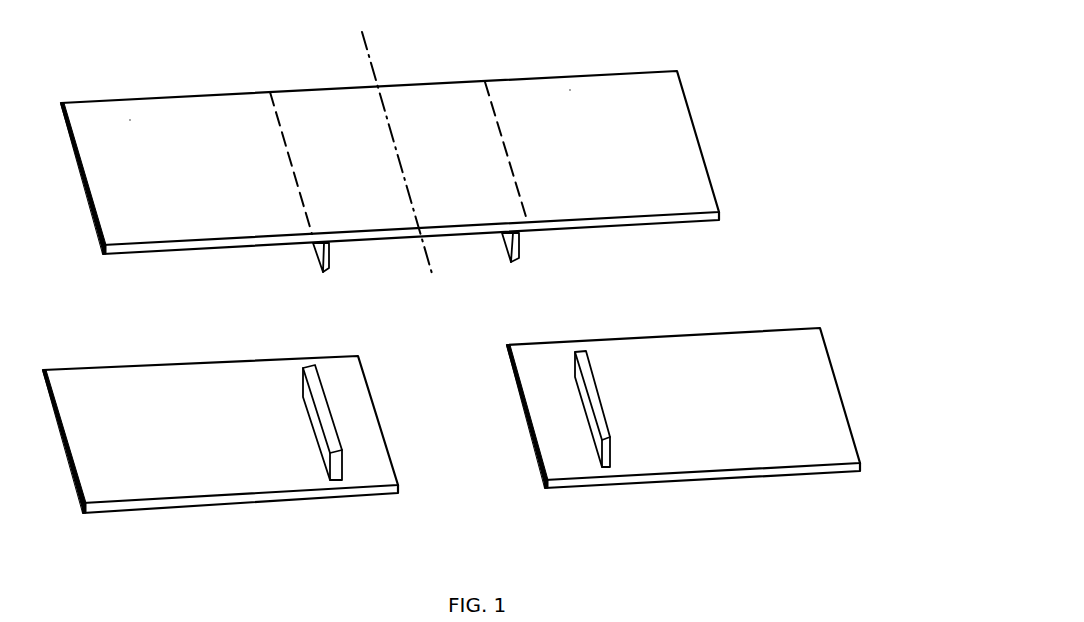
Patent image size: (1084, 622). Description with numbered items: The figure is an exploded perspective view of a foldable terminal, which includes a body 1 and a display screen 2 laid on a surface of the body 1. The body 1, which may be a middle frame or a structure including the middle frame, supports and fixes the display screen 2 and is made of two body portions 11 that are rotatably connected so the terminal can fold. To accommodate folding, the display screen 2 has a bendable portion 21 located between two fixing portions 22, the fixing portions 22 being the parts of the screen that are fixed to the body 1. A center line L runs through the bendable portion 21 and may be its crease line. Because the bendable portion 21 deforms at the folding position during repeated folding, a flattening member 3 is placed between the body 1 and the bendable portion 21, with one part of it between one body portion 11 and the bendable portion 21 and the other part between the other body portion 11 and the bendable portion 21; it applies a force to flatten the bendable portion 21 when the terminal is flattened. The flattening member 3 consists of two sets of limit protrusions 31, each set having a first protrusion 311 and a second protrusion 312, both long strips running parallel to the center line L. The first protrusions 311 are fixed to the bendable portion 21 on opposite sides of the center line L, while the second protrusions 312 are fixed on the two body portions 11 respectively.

The body 1 is at (501, 452).
The body portion 11 is at (175, 482).
The display screen 2 is at (432, 138).
The bendable portion 21 is at (323, 107).
The fixing portion 22 is at (145, 115).
The flattening member 3 is at (456, 356).
The limit protrusions 31 is at (456, 356).
The first protrusion 311 is at (320, 265).
The second protrusion 312 is at (456, 393).
The center line L is at (397, 153).